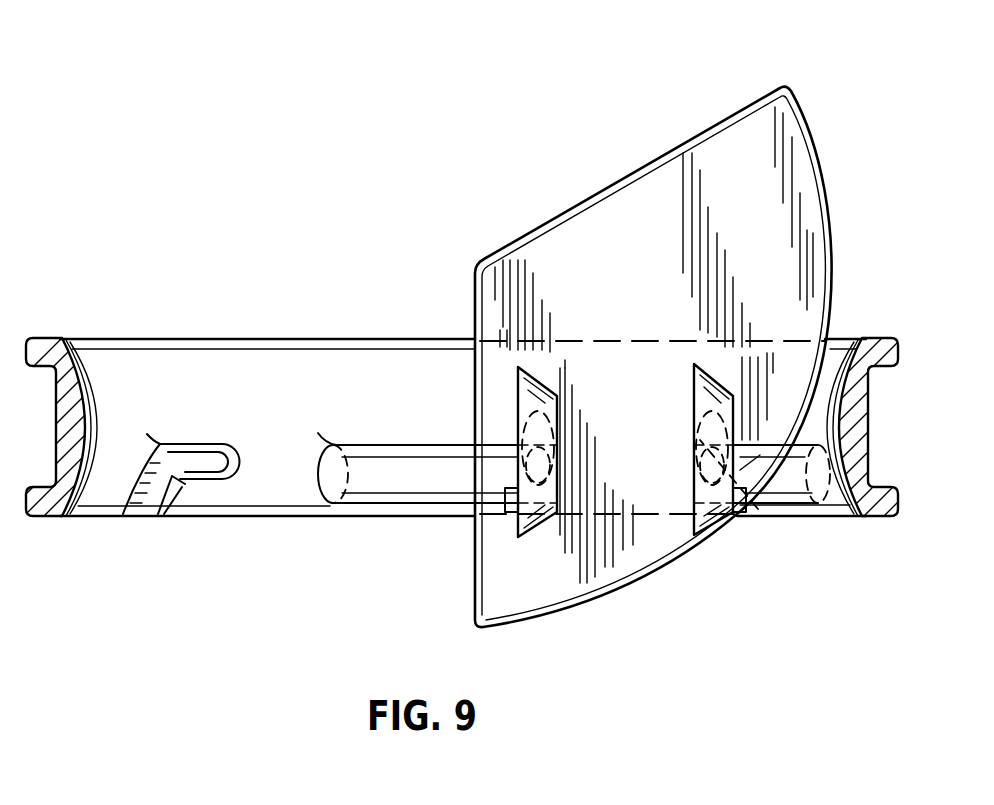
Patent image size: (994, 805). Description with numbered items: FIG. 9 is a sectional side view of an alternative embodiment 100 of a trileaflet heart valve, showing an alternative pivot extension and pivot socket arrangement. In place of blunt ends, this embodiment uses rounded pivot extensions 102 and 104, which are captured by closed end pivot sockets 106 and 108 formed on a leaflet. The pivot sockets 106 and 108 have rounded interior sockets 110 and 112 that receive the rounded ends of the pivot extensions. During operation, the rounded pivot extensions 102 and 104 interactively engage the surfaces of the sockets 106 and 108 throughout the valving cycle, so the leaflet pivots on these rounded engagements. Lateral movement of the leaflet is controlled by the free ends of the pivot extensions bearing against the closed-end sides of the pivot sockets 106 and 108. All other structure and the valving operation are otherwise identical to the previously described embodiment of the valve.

The alternative embodiment of trileaflet heart valve 100 is at (826, 50).
The rounded pivot extension 102 is at (535, 462).
The rounded pivot extension 104 is at (758, 509).
The closed end pivot socket 106 is at (524, 428).
The closed end pivot socket 108 is at (703, 425).
The rounded interior socket 110 is at (555, 431).
The rounded interior socket 112 is at (700, 436).